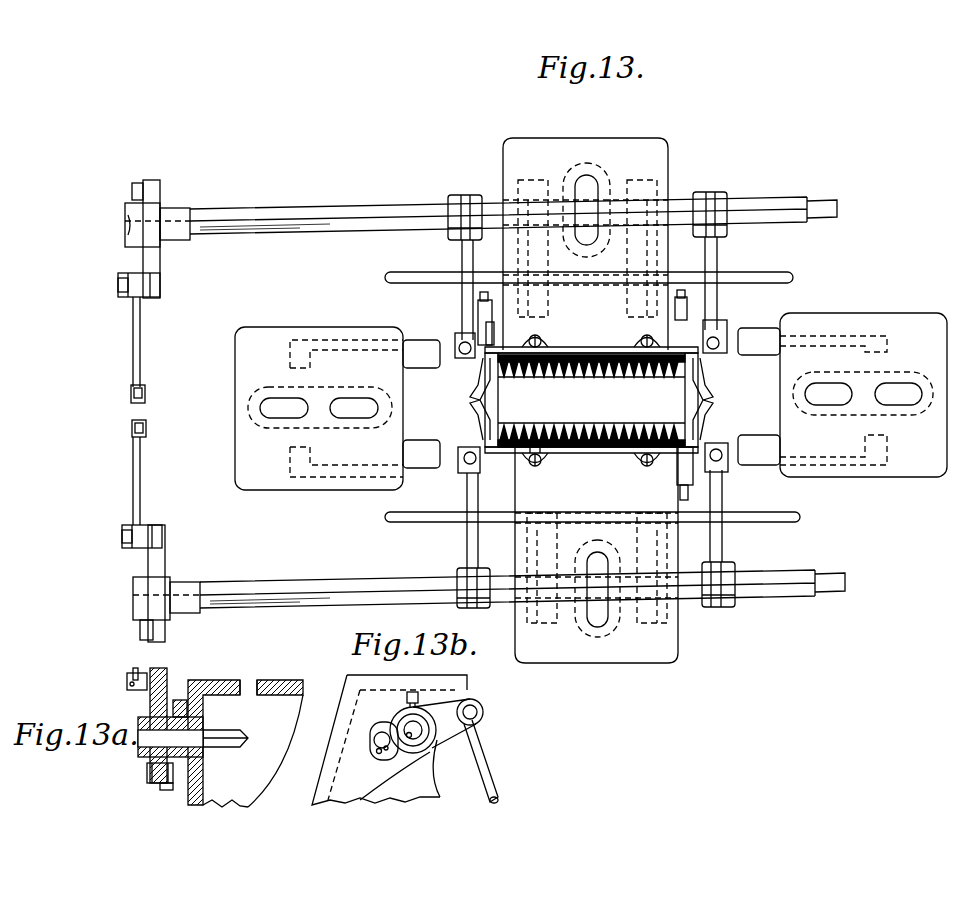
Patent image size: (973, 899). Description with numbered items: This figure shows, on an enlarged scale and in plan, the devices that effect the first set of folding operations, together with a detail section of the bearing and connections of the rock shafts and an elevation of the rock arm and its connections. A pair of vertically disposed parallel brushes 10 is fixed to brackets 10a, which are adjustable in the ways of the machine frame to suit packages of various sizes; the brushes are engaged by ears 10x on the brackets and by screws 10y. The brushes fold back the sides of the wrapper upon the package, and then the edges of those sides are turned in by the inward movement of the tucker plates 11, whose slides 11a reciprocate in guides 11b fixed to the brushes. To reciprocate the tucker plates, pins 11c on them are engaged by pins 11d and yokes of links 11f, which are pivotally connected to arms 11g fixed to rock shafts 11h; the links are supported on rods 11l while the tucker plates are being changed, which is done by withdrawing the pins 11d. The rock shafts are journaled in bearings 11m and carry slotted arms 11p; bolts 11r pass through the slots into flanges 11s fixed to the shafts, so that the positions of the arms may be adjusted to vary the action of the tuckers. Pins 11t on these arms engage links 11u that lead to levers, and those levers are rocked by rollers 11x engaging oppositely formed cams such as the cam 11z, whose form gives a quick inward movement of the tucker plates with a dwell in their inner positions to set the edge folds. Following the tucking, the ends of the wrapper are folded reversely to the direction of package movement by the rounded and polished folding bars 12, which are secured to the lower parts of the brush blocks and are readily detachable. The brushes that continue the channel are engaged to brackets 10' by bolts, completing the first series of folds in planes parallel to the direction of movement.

In FIG. 13, the brushes 10 is at (591, 400).
In FIG. 13, the brackets 10' is at (594, 400).
In FIG. 13, the brackets 10a is at (667, 162).
In FIG. 13, the ears 10x is at (640, 466).
In FIG. 13, the screws 10y is at (552, 470).
In FIG. 13, the tucker plates 11 is at (473, 418).
In FIG. 13, the slides 11a is at (700, 467).
In FIG. 13, the guides 11b is at (708, 262).
In FIG. 13, the pins 11c is at (487, 332).
In FIG. 13, the pins 11d is at (460, 340).
In FIG. 13, the links 11f is at (463, 262).
In FIG. 13, the arms 11g is at (470, 195).
In FIG. 13, the rock shafts 11h is at (315, 213).
In FIG. 13A, the rock shafts 11h is at (245, 740).
In FIG. 13, the rods 11l is at (782, 278).
In FIG. 13A, the bearings 11m is at (200, 762).
In FIG. 13B, the bearings 11m is at (428, 763).
In FIG. 13, the arms 11p is at (140, 268).
In FIG. 13A, the arms 11p is at (167, 700).
In FIG. 13B, the arms 11p is at (457, 733).
In FIG. 13A, the bolts 11r is at (150, 775).
In FIG. 13B, the bolts 11r is at (377, 750).
In FIG. 13A, the flanges 11s is at (170, 790).
In FIG. 13, the pins 11t is at (118, 290).
In FIG. 13A, the pins 11t is at (127, 680).
In FIG. 13B, the pins 11t is at (484, 704).
In FIG. 13, the links 11u is at (137, 345).
In FIG. 13B, the links 11u is at (497, 787).
In FIG. 13, the rollers 11x is at (798, 517).
In FIG. 13B, the cam 11z is at (377, 728).
In FIG. 13, the folding bars 12 is at (488, 400).